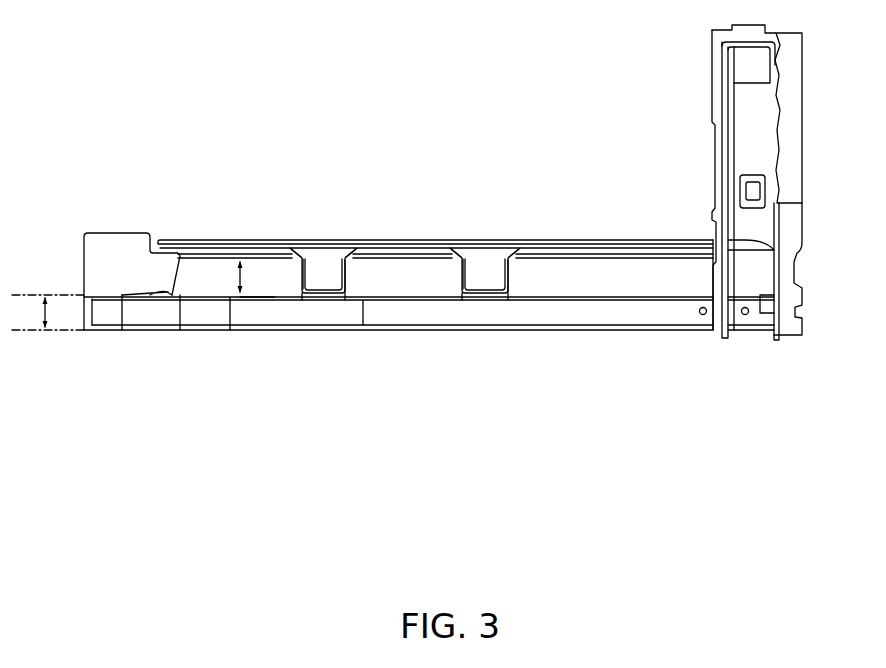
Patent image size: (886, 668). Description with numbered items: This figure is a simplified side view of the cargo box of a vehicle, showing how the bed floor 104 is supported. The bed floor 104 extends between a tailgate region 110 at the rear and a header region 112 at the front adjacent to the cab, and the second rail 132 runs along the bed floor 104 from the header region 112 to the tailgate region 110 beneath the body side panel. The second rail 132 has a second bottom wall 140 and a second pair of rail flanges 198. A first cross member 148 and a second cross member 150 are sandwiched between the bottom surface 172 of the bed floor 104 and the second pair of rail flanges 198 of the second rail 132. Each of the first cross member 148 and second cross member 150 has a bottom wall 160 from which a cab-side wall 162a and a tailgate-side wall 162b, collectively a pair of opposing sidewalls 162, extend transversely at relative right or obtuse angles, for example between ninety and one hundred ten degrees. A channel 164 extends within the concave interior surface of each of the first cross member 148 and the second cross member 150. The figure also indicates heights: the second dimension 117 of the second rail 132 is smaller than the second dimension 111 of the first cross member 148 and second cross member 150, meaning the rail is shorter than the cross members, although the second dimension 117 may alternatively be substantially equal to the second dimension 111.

The bed floor 104 is at (412, 239).
The tailgate region 110 is at (80, 251).
The second dimension of the cross members 111 is at (238, 258).
The header region 112 is at (805, 236).
The second dimension of the second rail 117 is at (50, 333).
The second rail 132 is at (423, 315).
The second bottom wall 140 is at (160, 333).
The first cross member 148 is at (323, 281).
The second cross member 150 is at (490, 277).
The bottom wall 160 is at (301, 261).
The pair of opposing sidewalls 162 is at (347, 273).
The cab-side wall 162a is at (355, 253).
The tailgate-side wall 162b is at (300, 256).
The channel 164 is at (310, 268).
The bottom surface 172 is at (568, 252).
The second pair of rail flanges 198 is at (257, 305).